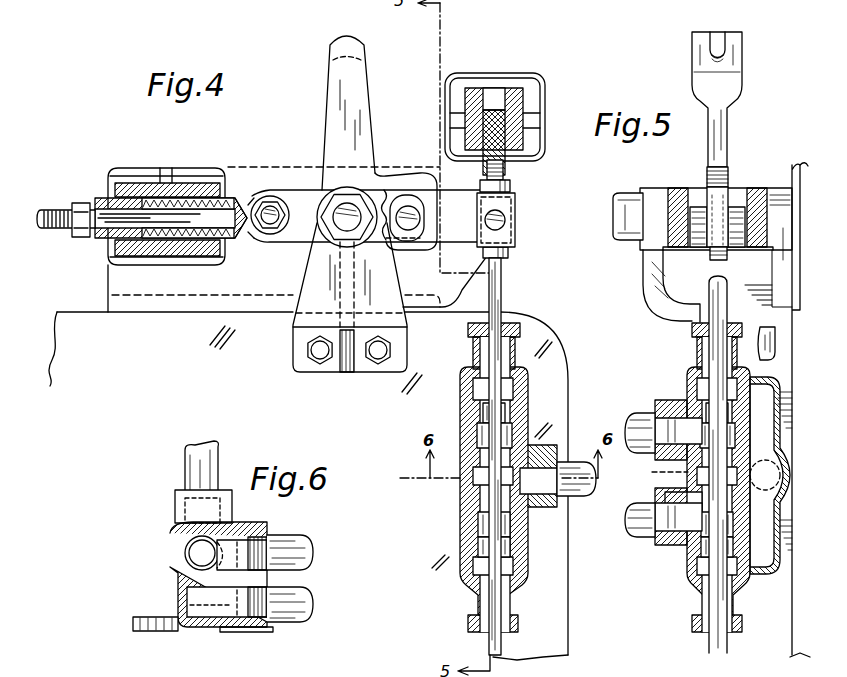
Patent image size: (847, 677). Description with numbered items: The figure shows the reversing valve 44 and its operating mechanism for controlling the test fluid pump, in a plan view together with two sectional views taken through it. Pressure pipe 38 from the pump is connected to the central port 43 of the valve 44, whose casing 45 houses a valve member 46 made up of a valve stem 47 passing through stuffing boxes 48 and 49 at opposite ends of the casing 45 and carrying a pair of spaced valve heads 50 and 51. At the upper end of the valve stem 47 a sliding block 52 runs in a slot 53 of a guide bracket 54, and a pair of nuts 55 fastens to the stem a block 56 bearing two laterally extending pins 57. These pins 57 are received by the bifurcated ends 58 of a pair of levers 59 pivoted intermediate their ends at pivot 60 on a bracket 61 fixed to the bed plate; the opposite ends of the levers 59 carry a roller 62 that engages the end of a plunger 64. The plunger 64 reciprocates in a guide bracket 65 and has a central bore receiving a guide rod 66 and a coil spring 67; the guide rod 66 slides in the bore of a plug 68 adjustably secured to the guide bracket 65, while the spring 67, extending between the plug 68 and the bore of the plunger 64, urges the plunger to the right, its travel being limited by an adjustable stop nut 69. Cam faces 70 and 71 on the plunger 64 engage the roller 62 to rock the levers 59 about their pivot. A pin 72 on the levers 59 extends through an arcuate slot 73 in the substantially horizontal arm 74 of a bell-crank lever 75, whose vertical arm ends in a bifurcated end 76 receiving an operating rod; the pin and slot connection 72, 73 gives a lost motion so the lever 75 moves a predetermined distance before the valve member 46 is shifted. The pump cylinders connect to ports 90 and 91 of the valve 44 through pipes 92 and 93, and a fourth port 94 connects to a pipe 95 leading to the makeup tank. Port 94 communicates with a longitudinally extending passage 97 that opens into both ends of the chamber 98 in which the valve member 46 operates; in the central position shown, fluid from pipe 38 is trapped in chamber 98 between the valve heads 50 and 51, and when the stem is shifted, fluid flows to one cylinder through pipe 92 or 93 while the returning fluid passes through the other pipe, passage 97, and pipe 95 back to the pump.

In FIG. 4, the pressure pipe 38 is at (582, 461).
In FIG. 5, the pressure pipe 38 is at (660, 472).
In FIG. 6, the pressure pipe 38 is at (296, 535).
In FIG. 4, the central port 43 is at (556, 458).
In FIG. 4, the reversing valve 44 is at (462, 490).
In FIG. 4, the casing 45 is at (530, 529).
In FIG. 4, the valve member 46 is at (478, 476).
In FIG. 4, the valve stem 47 is at (503, 296).
In FIG. 4, the stuffing box 48 is at (520, 329).
In FIG. 4, the stuffing box 49 is at (520, 621).
In FIG. 4, the valve head 50 is at (480, 430).
In FIG. 4, the valve head 51 is at (480, 525).
In FIG. 4, the sliding block 52 is at (513, 196).
In FIG. 4, the slot 53 is at (494, 100).
In FIG. 4, the guide bracket 54 is at (523, 106).
In FIG. 4, the nuts 55 is at (510, 253).
In FIG. 4, the block 56 is at (516, 222).
In FIG. 5, the pins 57 is at (738, 210).
In FIG. 5, the bifurcated ends 58 is at (762, 200).
In FIG. 4, the levers 59 is at (381, 190).
In FIG. 4, the pivot 60 is at (334, 224).
In FIG. 4, the bracket 61 is at (297, 300).
In FIG. 4, the roller 62 is at (276, 196).
In FIG. 4, the plunger 64 is at (172, 258).
In FIG. 4, the guide bracket 65 is at (167, 168).
In FIG. 4, the guide rod 66 is at (140, 200).
In FIG. 4, the coil spring 67 is at (197, 183).
In FIG. 4, the plug 68 is at (107, 200).
In FIG. 4, the adjustable stop nut 69 is at (78, 238).
In FIG. 4, the cam face 70 is at (249, 203).
In FIG. 4, the cam face 71 is at (246, 237).
In FIG. 4, the pin 72 is at (419, 217).
In FIG. 4, the arcuate slot 73 is at (407, 240).
In FIG. 4, the horizontal arm 74 is at (416, 172).
In FIG. 4, the bell-crank lever 75 is at (358, 95).
In FIG. 5, the bifurcated end 76 is at (736, 56).
In FIG. 5, the port 90 is at (664, 546).
In FIG. 5, the port 91 is at (666, 400).
In FIG. 5, the pipe 92 is at (632, 536).
In FIG. 5, the pipe 93 is at (641, 418).
In FIG. 6, the pipe 93 is at (186, 458).
In FIG. 6, the fourth port 94 is at (256, 632).
In FIG. 5, the pipe 95 is at (766, 490).
In FIG. 6, the pipe 95 is at (291, 622).
In FIG. 5, the longitudinally extending passage 97 is at (762, 555).
In FIG. 5, the chamber 98 is at (665, 498).